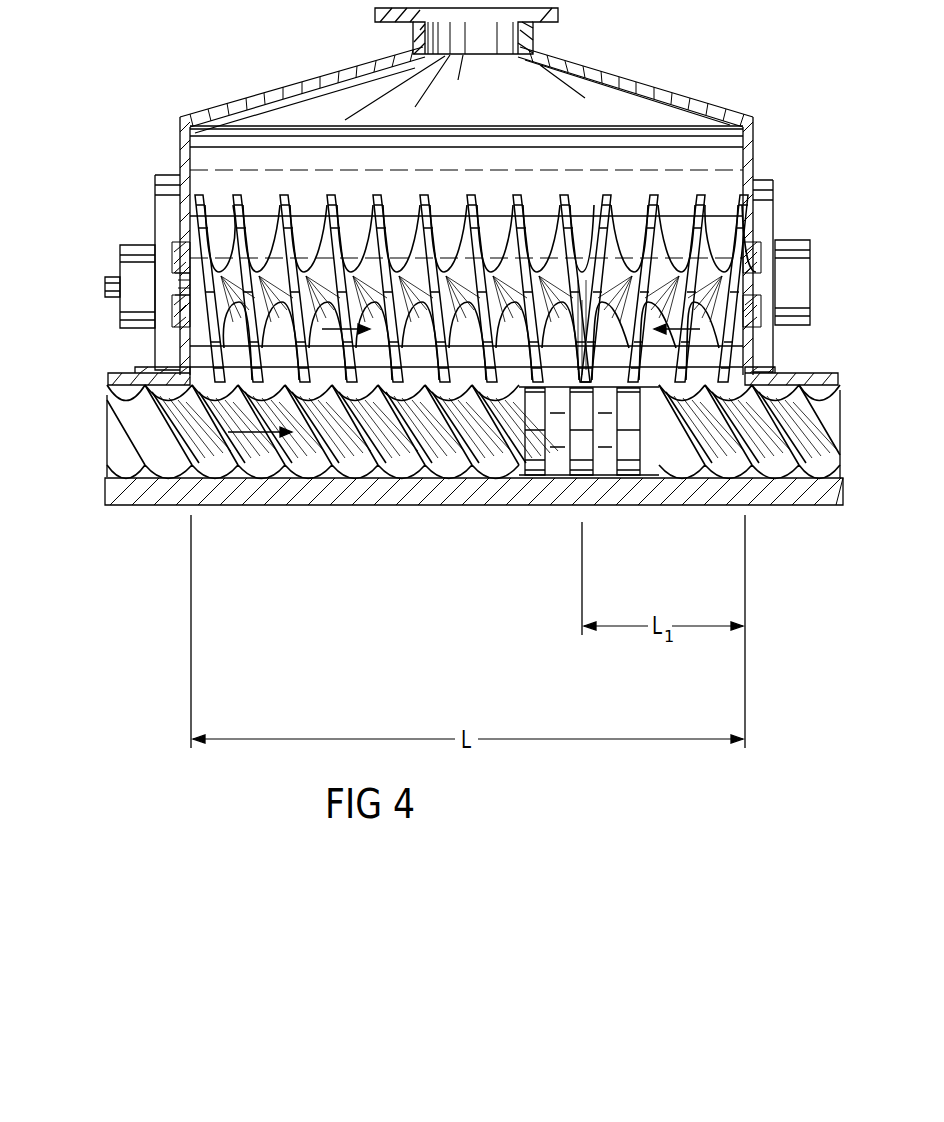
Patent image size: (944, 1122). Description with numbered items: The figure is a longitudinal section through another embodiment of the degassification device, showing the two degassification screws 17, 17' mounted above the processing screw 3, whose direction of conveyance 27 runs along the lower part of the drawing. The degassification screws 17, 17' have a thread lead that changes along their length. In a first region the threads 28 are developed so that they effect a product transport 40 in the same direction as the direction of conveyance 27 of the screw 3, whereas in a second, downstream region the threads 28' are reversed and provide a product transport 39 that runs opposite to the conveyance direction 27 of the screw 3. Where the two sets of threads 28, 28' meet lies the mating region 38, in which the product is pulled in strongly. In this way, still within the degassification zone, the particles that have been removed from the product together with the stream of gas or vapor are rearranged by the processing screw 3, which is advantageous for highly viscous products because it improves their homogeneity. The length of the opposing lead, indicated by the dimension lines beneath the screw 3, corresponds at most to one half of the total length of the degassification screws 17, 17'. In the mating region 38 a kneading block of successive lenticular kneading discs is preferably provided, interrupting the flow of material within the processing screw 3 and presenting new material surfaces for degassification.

The degassification screw 17 is at (475, 263).
The degassification screw 17' is at (664, 288).
The threads 28 is at (392, 264).
The threads 28' is at (674, 262).
The mating region 38 is at (584, 240).
The product transport 40 is at (322, 331).
The product transport 39 is at (698, 331).
The direction of conveyance 27 is at (247, 437).
The screw 3 is at (345, 450).